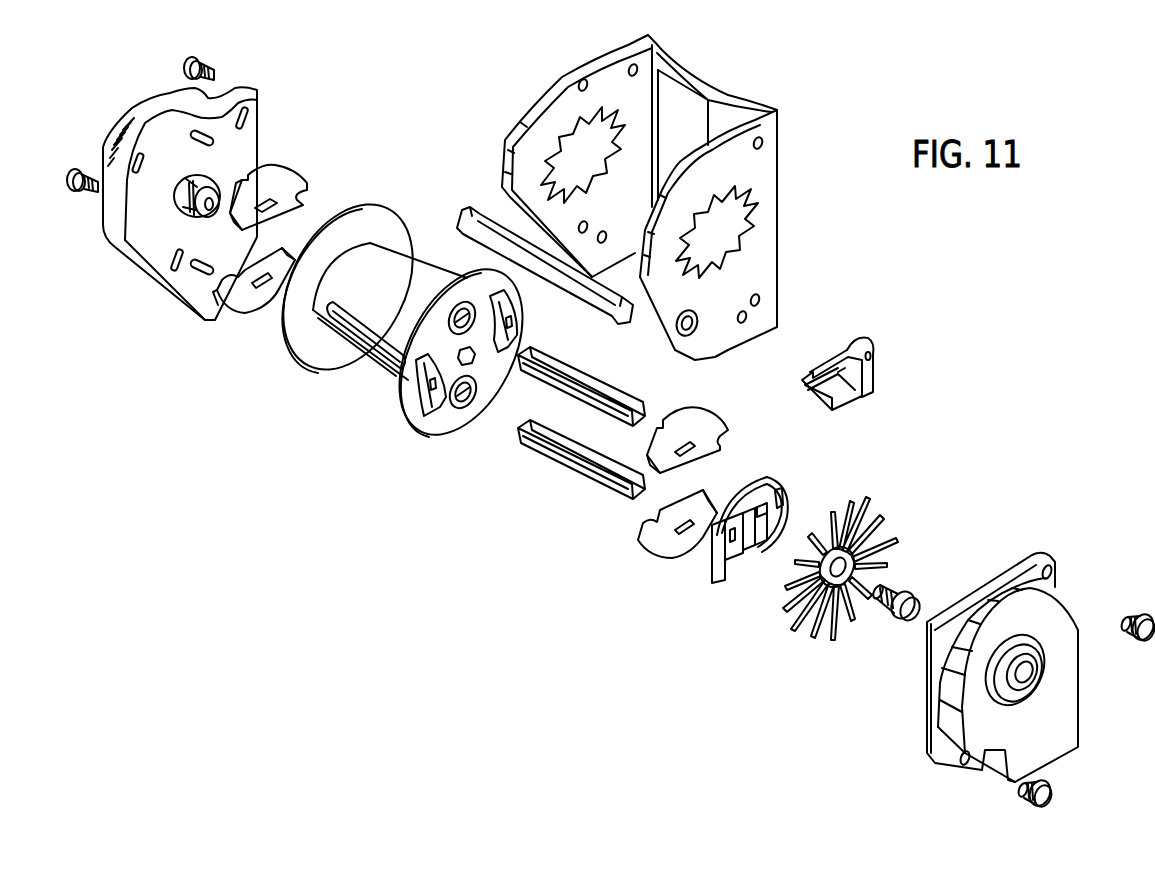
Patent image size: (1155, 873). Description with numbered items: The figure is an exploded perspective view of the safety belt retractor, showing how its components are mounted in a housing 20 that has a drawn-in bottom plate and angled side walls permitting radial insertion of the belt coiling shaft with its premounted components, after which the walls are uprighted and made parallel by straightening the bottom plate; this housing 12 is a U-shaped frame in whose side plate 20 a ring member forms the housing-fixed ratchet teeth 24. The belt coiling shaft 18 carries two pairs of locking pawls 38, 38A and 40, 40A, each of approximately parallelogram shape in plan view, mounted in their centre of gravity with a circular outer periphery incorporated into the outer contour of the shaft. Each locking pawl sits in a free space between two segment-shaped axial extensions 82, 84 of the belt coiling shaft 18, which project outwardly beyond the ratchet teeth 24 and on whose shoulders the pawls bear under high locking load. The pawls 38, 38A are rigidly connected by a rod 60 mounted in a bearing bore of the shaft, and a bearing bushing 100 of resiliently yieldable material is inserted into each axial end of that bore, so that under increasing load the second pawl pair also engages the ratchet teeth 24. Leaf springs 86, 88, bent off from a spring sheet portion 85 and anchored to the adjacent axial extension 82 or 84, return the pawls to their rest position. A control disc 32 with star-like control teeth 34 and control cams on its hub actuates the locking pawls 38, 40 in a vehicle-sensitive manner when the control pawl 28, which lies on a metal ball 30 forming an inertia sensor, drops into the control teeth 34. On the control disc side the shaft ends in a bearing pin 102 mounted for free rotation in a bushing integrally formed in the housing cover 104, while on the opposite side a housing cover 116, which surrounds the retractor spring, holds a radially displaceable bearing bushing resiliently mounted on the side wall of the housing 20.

The housing 12 is at (757, 100).
The belt coiling shaft 18 is at (378, 347).
The side plate 20 is at (770, 168).
The ratchet teeth 24 is at (745, 235).
The control pawl 28 is at (830, 370).
The metal ball 30 is at (850, 385).
The control disc 32 is at (860, 560).
The control teeth 34 is at (883, 515).
The locking pawl 38 is at (668, 548).
The locking pawl 38A is at (256, 300).
The locking pawl 40 is at (710, 423).
The locking pawl 40A is at (290, 180).
The rod 60 is at (598, 388).
The axial extension 82 is at (510, 333).
The axial extension 84 is at (430, 400).
The spring sheet portion 85 is at (773, 487).
The leaf spring 86 is at (765, 540).
The leaf spring 88 is at (722, 580).
The bearing bushing 100 is at (468, 302).
The bearing pin 102 is at (918, 602).
The housing cover 104 is at (1068, 620).
The housing cover 116 is at (150, 108).